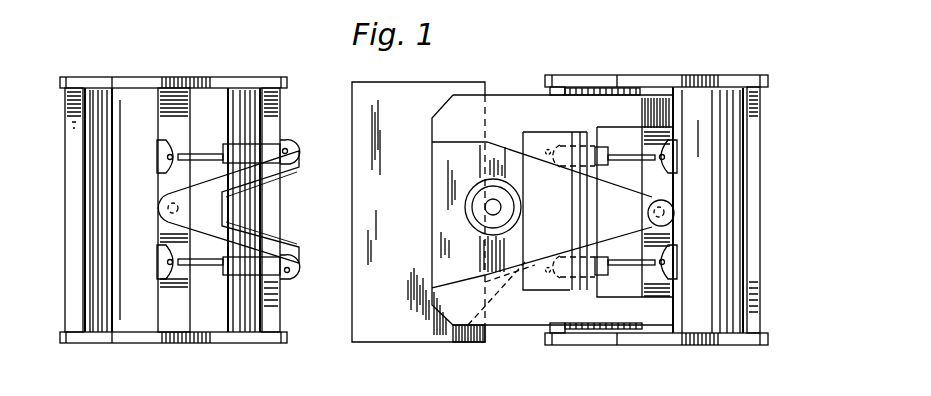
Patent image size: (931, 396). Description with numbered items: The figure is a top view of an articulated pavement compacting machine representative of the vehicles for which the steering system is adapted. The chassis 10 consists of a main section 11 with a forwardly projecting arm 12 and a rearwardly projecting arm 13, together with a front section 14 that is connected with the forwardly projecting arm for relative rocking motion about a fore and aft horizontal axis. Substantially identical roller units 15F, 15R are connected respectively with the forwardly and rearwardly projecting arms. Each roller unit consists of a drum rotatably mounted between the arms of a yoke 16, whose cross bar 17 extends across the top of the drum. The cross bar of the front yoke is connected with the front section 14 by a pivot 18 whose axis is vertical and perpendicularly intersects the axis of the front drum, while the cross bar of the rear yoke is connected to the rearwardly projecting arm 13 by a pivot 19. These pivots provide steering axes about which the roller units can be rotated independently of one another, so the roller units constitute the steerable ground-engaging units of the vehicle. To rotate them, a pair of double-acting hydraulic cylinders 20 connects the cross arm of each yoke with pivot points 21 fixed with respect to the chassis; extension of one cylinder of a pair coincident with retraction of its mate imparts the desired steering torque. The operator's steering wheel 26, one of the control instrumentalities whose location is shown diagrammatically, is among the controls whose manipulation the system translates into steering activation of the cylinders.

The chassis 10 is at (527, 58).
The main section 11 is at (409, 231).
The forwardly projecting arm 12 is at (333, 247).
The rearwardly projecting arm 13 is at (460, 335).
The front section 14 is at (187, 183).
The front roller unit 15F is at (433, 206).
The rear roller unit 15R is at (725, 133).
The yoke 16 is at (243, 79).
The cross bar 17 is at (167, 107).
The pivot 18 is at (157, 207).
The pivot 19 is at (680, 217).
The double-acting hydraulic cylinders 20 is at (247, 267).
The pivot points 21 is at (287, 150).
The steering wheel 26 is at (475, 208).